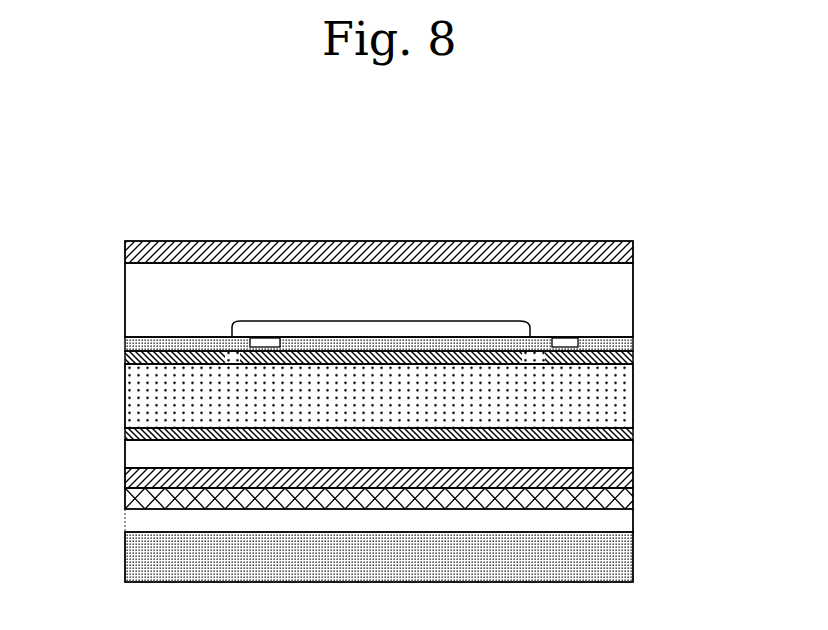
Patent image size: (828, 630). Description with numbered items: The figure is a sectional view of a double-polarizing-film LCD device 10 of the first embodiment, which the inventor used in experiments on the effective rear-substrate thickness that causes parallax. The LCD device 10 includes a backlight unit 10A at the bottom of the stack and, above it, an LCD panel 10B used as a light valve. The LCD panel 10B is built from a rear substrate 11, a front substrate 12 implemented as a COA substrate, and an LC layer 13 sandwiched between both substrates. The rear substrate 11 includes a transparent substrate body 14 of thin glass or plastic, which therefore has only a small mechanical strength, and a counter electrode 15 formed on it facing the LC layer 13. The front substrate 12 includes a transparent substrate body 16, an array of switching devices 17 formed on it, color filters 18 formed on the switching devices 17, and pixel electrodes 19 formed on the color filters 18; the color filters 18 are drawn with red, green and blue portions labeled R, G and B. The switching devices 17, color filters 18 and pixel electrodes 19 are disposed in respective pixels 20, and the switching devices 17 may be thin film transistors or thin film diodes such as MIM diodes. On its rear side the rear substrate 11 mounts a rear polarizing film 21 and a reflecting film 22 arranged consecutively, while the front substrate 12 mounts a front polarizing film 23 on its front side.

The LCD device 10 is at (548, 123).
The backlight unit 10A is at (135, 557).
The LCD panel 10B is at (72, 300).
The rear substrate 11 is at (122, 430).
The front substrate 12 is at (122, 263).
The LC layer 13 is at (122, 364).
The transparent substrate body 14 is at (620, 457).
The counter electrode 15 is at (634, 432).
The transparent substrate body 16 is at (622, 298).
The switching devices 17 is at (265, 338).
The color filters 18 is at (634, 343).
The pixel electrodes 19 is at (634, 360).
The pixels 20 is at (383, 320).
The rear polarizing film 21 is at (634, 478).
The reflecting film 22 is at (634, 500).
The front polarizing film 23 is at (634, 250).
The red color filter R is at (180, 337).
The green color filter G is at (485, 337).
The blue color filter B is at (605, 337).